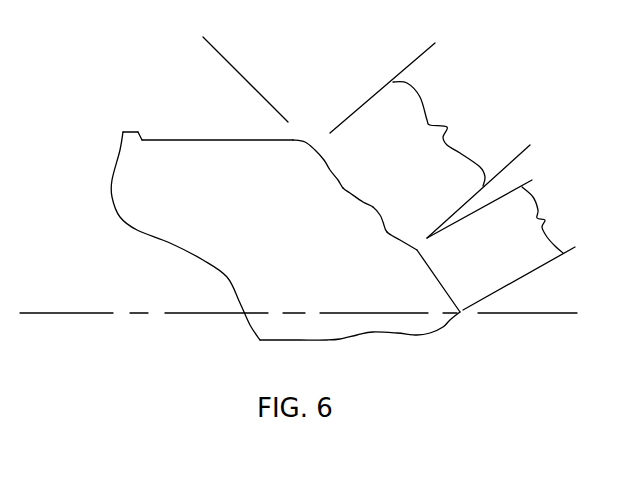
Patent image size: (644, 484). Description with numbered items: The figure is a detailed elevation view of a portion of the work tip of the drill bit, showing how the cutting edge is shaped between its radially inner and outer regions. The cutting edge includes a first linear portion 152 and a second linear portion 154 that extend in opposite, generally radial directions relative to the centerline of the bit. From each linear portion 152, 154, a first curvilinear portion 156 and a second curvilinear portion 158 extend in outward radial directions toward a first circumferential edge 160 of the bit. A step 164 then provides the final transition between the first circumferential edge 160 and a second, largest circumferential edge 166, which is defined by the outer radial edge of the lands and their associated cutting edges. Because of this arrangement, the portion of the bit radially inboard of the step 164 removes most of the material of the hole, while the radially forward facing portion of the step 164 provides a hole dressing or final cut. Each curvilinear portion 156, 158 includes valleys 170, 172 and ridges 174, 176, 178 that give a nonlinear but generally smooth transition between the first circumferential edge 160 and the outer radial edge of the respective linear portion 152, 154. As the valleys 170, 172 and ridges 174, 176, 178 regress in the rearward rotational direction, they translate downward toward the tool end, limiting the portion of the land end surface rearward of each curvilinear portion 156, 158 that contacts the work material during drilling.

The first linear portion 152 is at (518, 245).
The second linear portion 154 is at (518, 245).
The first curvilinear portion 156 is at (461, 160).
The second curvilinear portion 158 is at (461, 160).
The first circumferential edge 160 is at (219, 140).
The step 164 is at (142, 137).
The second circumferential edge 166 is at (129, 128).
The valley 170 is at (387, 233).
The valley 172 is at (345, 188).
The ridge 174 is at (415, 247).
The ridge 176 is at (373, 207).
The ridge 178 is at (315, 152).